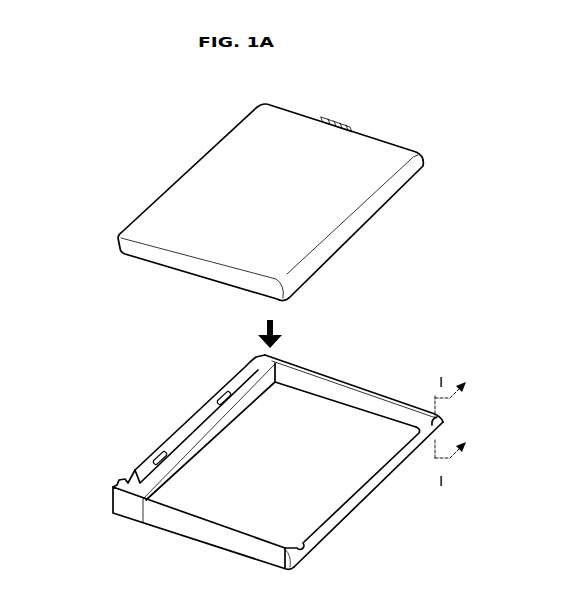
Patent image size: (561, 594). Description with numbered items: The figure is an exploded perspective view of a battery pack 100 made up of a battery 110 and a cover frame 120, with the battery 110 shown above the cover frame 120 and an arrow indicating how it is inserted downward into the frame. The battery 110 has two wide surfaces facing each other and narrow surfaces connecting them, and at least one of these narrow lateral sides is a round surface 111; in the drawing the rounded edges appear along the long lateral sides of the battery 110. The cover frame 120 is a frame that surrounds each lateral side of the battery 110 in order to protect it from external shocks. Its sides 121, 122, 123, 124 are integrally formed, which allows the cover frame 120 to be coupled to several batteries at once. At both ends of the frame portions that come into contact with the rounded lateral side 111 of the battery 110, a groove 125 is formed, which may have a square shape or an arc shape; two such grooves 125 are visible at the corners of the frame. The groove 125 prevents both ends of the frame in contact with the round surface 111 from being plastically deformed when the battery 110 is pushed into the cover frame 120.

The battery pack 100 is at (110, 120).
The battery 110 is at (254, 202).
The round surface 111 is at (117, 238).
The cover frame 120 is at (285, 458).
The side of the cover frame 121 is at (384, 478).
The side of the cover frame 122 is at (345, 392).
The side of the cover frame 123 is at (190, 531).
The side of the cover frame 124 is at (120, 481).
The groove 125 is at (446, 412).